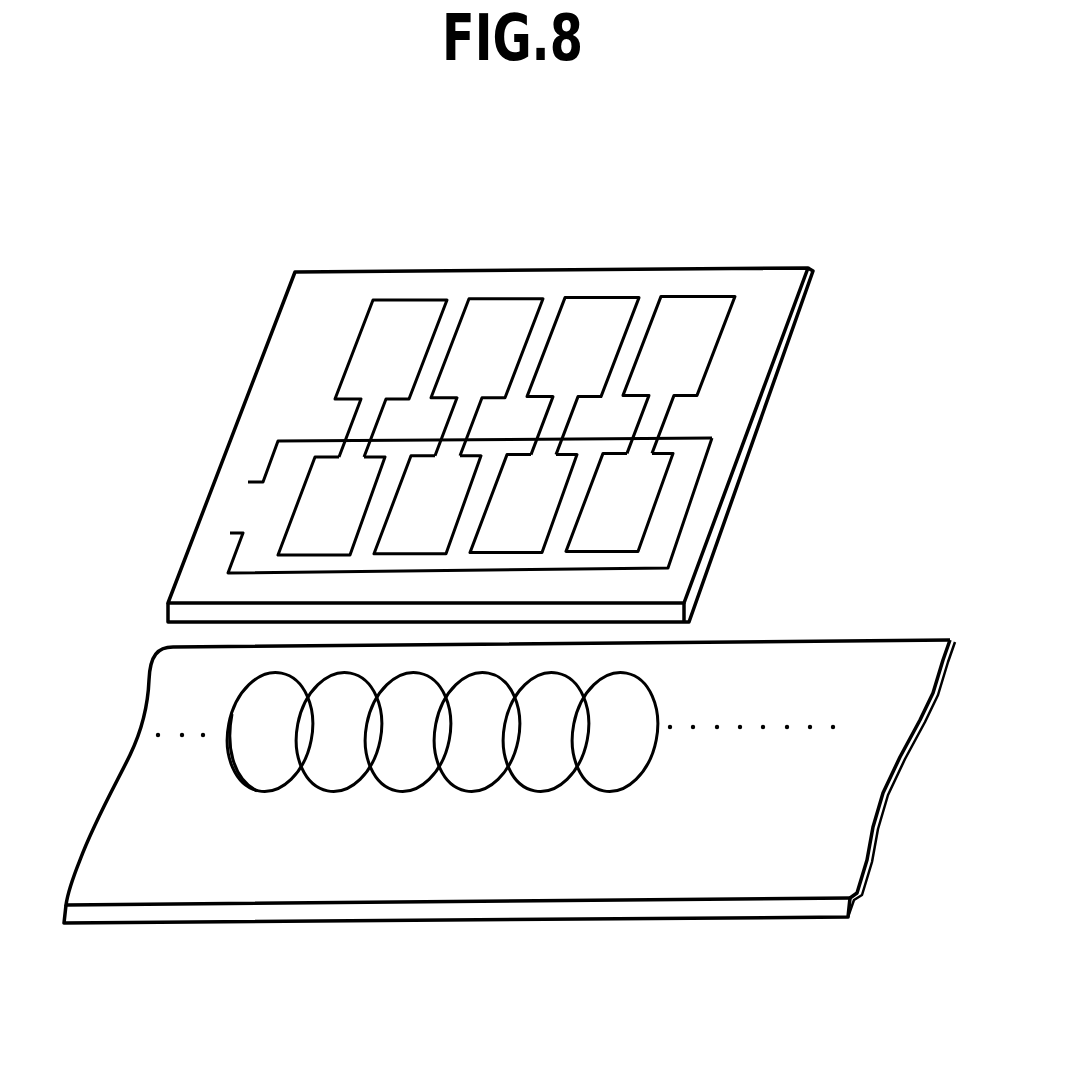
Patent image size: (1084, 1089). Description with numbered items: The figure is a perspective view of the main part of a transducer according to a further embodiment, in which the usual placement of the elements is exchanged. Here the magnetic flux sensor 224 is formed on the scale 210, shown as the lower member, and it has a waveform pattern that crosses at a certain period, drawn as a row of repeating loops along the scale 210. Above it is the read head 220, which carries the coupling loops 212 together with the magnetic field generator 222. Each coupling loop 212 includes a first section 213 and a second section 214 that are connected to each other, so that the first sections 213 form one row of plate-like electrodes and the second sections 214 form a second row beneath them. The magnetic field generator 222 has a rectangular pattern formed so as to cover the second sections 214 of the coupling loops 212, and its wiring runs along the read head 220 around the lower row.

The scale 210 is at (897, 655).
The first coupling loop 212 is at (502, 300).
The first section 213 is at (717, 345).
The second section 214 is at (643, 530).
The read head 220 is at (750, 278).
The magnetic field generator 222 is at (703, 473).
The magnetic flux sensor 224 is at (622, 777).